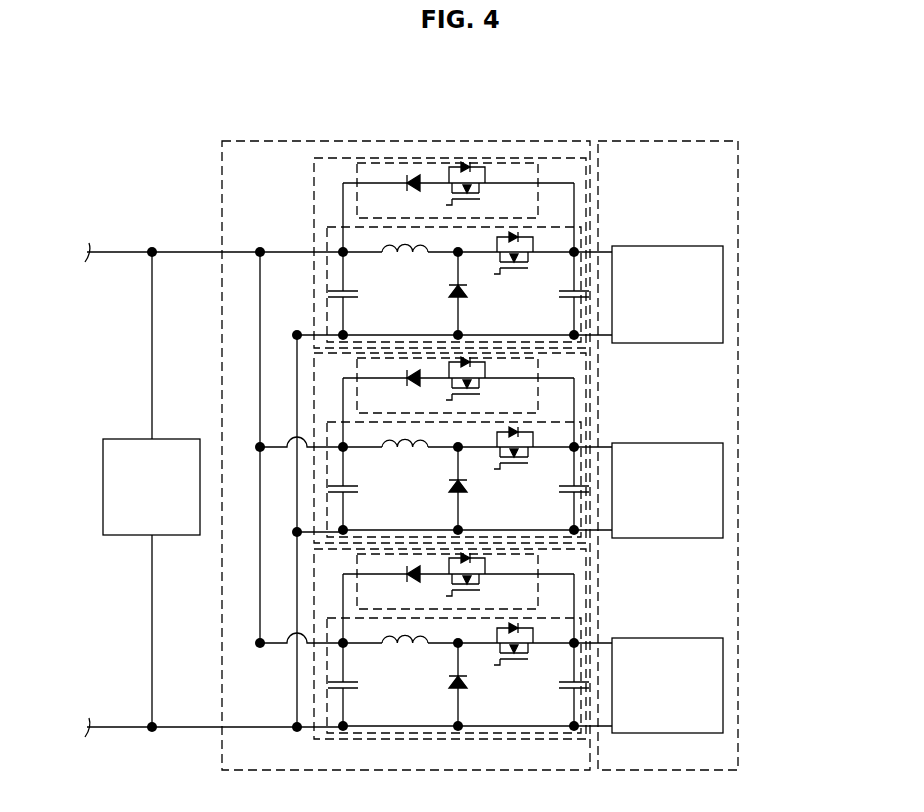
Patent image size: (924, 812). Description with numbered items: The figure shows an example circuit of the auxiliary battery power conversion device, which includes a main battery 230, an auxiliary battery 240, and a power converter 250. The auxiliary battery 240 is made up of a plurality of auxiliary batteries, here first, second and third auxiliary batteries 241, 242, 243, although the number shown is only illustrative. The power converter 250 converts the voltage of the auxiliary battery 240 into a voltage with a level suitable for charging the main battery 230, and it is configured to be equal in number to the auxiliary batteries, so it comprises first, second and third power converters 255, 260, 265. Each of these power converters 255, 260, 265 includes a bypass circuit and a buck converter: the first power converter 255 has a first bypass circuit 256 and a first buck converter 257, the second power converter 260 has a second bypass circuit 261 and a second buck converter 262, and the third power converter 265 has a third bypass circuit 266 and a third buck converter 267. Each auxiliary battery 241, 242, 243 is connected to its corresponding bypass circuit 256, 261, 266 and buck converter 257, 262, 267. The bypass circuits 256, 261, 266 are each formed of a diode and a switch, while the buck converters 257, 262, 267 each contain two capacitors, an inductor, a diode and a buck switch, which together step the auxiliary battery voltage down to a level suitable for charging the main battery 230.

The main battery 230 is at (103, 488).
The auxiliary battery 240 is at (669, 141).
The first auxiliary battery 241 is at (723, 295).
The second auxiliary battery 242 is at (723, 488).
The third auxiliary battery 243 is at (723, 684).
The power converter 250 is at (427, 141).
The first power converter 255 is at (314, 186).
The first bypass circuit 256 is at (356, 172).
The first buck converter 257 is at (327, 313).
The second power converter 260 is at (331, 456).
The second bypass circuit 261 is at (328, 396).
The second buck converter 262 is at (331, 494).
The third power converter 265 is at (337, 644).
The third bypass circuit 266 is at (318, 598).
The third buck converter 267 is at (426, 675).